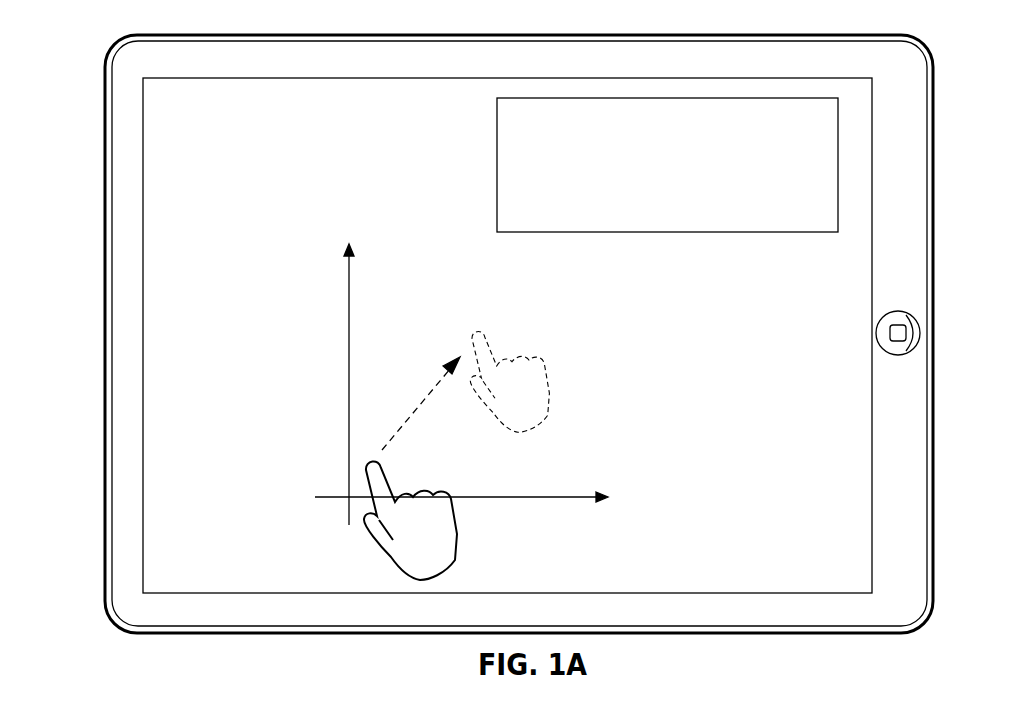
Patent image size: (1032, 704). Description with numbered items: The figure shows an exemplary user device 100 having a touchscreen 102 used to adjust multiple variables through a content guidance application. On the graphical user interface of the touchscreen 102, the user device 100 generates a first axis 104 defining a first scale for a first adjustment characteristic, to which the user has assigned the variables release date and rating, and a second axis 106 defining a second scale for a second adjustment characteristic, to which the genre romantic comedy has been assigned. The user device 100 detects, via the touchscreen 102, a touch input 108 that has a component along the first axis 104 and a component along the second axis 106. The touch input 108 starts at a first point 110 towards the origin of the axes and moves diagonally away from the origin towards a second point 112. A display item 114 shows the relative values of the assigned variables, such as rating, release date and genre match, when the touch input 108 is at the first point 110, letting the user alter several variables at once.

The user device 100 is at (160, 37).
The touchscreen 102 is at (143, 540).
The first axis 104 is at (540, 500).
The second axis 106 is at (349, 370).
The touch input 108 is at (420, 403).
The first point 110 is at (363, 456).
The second point 112 is at (467, 316).
The display item 114 is at (685, 232).